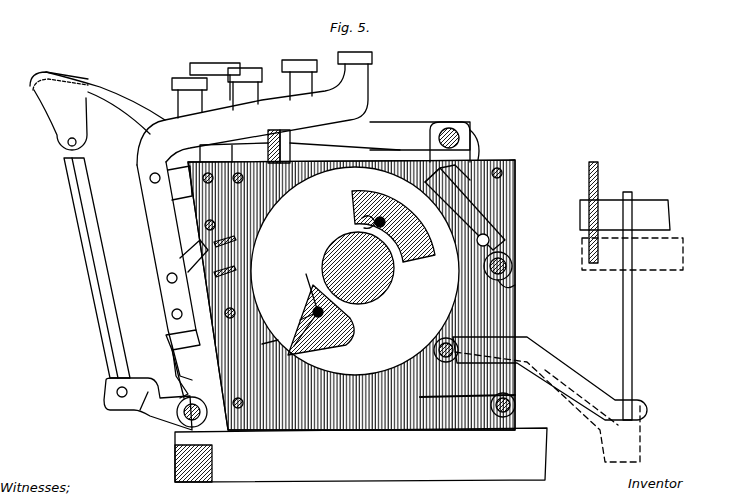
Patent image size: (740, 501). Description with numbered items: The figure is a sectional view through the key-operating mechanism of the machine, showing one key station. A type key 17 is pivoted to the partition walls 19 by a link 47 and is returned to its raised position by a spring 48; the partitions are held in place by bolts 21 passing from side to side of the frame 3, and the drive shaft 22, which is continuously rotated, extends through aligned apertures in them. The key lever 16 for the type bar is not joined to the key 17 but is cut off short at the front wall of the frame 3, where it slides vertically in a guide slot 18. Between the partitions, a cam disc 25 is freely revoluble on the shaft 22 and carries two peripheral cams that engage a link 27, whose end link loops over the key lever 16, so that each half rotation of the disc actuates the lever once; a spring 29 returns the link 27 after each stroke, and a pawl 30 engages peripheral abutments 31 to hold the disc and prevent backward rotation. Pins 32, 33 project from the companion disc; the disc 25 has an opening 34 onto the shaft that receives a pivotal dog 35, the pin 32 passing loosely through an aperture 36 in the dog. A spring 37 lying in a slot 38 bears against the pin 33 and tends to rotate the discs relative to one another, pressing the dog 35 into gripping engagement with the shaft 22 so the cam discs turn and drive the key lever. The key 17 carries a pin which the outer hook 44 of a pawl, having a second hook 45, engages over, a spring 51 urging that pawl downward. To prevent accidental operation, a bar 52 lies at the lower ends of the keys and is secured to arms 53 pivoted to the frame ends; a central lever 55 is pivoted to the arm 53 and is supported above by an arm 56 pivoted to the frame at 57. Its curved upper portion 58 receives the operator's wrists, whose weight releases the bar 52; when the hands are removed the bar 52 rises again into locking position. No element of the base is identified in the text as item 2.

The base plate 2 is at (410, 458).
The frame 3 is at (588, 176).
The key lever 16 is at (642, 200).
The type key 17 is at (256, 120).
The guide slot 18 is at (582, 260).
The partition wall 19 is at (308, 415).
The bolt 21 is at (503, 162).
The drive shaft 22 is at (396, 272).
The cam disc 25 is at (496, 282).
The link 27 is at (480, 340).
The spring 29 is at (490, 406).
The pawl 30 is at (466, 210).
The peripheral abutment 31 is at (258, 348).
The pin 32 is at (302, 318).
The pin 33 is at (378, 216).
The opening 34 is at (345, 346).
The dog 35 is at (306, 278).
The aperture 36 is at (312, 312).
The spring 37 is at (410, 200).
The slot 38 is at (362, 222).
The outer hook 44 is at (176, 292).
The hook 45 is at (176, 262).
The link 47 is at (145, 162).
The spring 48 is at (150, 184).
The spring 51 is at (178, 258).
The bar 52 is at (170, 340).
The arm 53 is at (136, 408).
The central lever 55 is at (70, 200).
The arm 56 is at (126, 100).
The pivot 57 is at (452, 130).
The transversely extending portion 58 is at (56, 72).